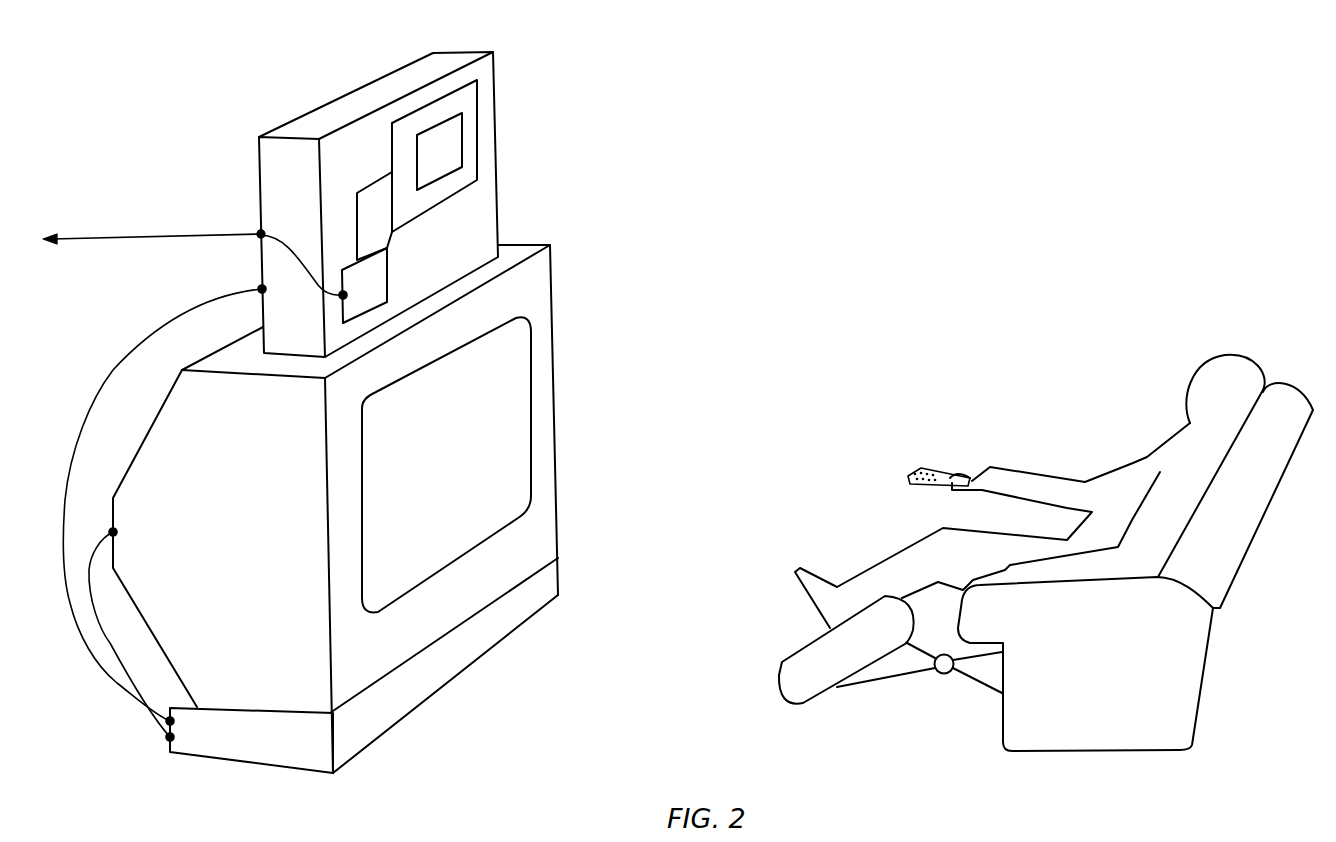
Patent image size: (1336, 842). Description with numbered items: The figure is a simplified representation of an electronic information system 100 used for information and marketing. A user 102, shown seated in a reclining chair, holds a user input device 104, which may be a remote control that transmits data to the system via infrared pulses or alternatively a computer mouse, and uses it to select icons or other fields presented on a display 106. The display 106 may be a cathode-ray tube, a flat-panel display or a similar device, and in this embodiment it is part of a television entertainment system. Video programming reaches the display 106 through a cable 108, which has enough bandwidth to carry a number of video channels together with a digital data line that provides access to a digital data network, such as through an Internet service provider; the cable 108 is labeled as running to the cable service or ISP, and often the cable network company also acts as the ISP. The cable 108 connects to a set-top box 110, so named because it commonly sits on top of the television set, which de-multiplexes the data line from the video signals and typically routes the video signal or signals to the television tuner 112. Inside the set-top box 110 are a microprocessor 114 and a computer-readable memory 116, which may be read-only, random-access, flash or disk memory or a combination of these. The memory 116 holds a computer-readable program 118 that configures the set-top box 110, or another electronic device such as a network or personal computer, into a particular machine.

The electronic information system 100 is at (943, 173).
The user 102 is at (1233, 355).
The user input device 104 is at (933, 465).
The display 106 is at (533, 457).
The cable 108 is at (108, 239).
The set-top box 110 is at (477, 53).
The television tuner 112 is at (558, 577).
The microprocessor 114 is at (390, 267).
The computer-readable memory 116 is at (478, 93).
The computer-readable program 118 is at (462, 148).